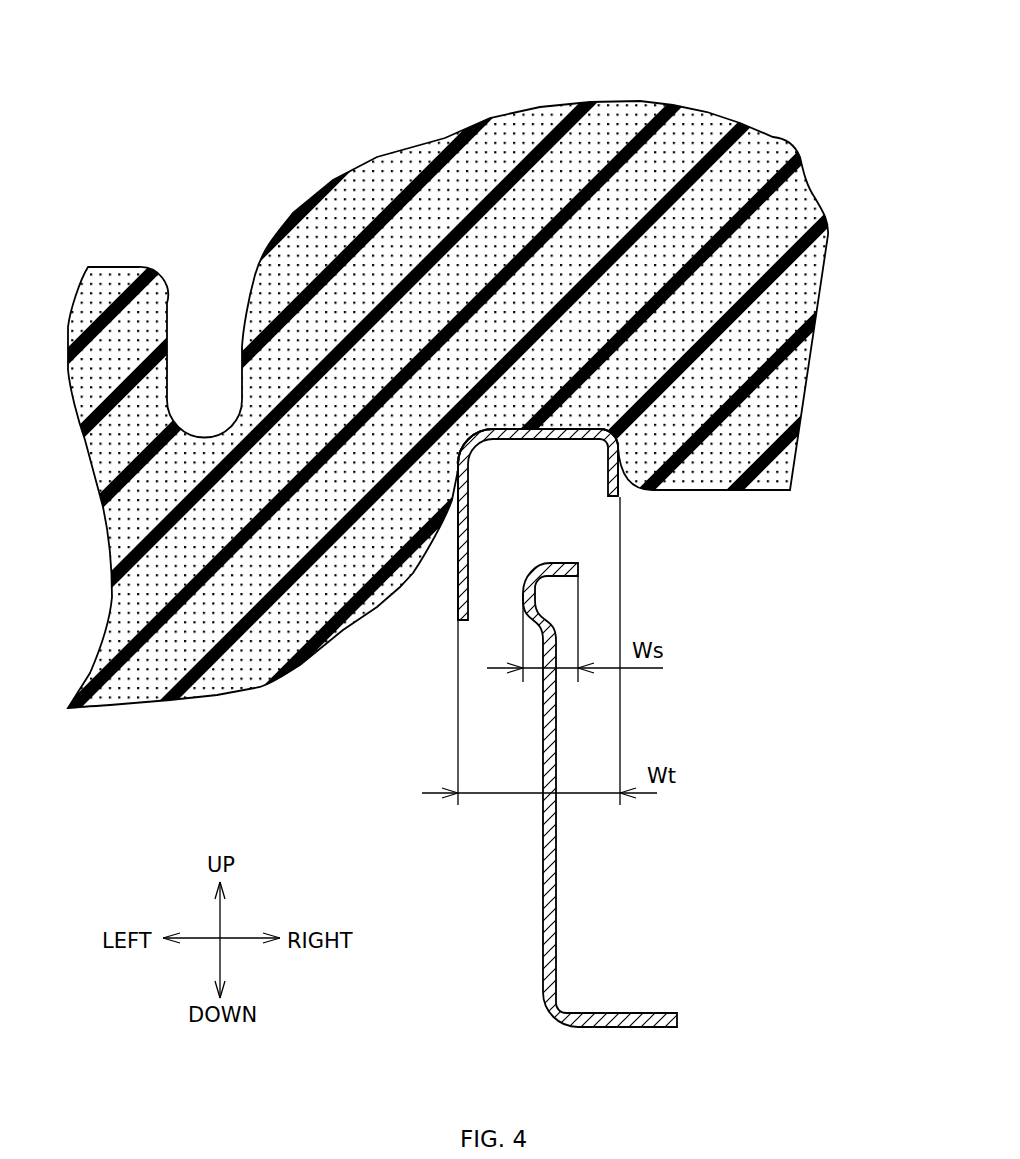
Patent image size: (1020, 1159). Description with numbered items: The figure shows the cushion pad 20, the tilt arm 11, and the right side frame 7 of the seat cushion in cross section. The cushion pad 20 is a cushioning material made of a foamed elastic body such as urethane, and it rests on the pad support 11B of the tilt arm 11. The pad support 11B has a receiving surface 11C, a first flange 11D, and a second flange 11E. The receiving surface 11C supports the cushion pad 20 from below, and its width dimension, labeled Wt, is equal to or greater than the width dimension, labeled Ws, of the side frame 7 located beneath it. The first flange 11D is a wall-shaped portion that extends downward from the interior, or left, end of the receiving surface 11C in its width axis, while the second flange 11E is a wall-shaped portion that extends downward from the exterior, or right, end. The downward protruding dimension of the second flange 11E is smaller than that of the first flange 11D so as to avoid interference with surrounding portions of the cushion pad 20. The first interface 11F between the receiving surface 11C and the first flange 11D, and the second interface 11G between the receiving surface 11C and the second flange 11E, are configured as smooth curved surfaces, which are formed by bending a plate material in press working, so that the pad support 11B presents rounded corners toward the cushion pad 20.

The cushion pad 20 is at (631, 100).
The tilt arm 11 is at (457, 605).
The pad support 11B is at (557, 472).
The receiving surface 11C is at (570, 428).
The first flange 11D is at (457, 578).
The second flange 11E is at (620, 493).
The first interface 11F is at (460, 442).
The second interface 11G is at (614, 428).
The right side frame 7 is at (557, 932).